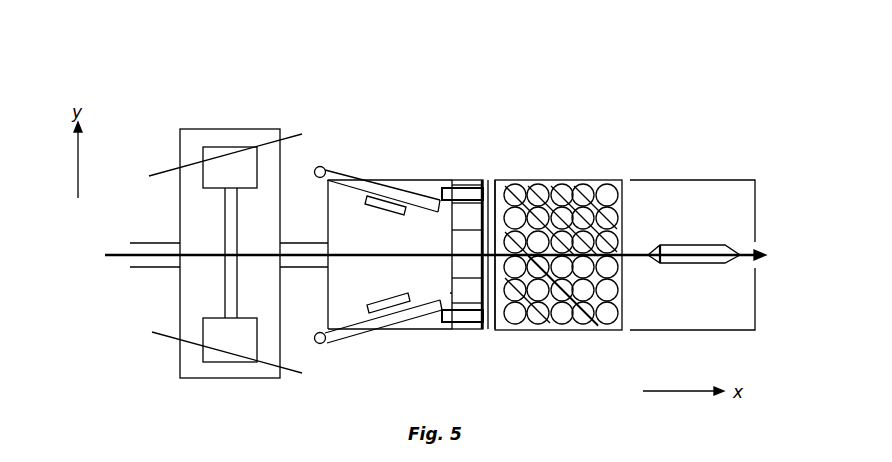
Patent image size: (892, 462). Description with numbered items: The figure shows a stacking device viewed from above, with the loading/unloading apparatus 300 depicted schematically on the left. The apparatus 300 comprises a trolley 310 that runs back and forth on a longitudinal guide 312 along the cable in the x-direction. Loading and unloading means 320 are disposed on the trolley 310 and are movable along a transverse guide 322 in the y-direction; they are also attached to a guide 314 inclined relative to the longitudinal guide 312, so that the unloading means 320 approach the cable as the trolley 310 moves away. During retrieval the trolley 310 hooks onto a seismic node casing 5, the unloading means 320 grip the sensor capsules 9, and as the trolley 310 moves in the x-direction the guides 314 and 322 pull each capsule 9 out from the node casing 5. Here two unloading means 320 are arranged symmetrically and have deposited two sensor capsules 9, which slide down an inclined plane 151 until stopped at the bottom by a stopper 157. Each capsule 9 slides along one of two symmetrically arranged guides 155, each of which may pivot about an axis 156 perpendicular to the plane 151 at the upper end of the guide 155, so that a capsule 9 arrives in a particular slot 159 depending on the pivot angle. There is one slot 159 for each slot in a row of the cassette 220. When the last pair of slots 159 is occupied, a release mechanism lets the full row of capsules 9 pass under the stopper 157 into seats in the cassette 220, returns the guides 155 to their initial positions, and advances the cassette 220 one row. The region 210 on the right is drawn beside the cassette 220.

The loading/unloading apparatus 300 is at (186, 92).
The trolley 310 is at (195, 379).
The longitudinal guide 312 is at (176, 242).
The inclined guide 314 is at (178, 348).
The loading and unloading means 320 is at (231, 146).
The transverse guide 322 is at (225, 279).
The inclined plane 151 is at (418, 180).
The guide 155 is at (345, 336).
The axis 156 is at (325, 166).
The stopper 157 is at (496, 180).
The slot 159 is at (450, 293).
The sensor capsule 9 is at (385, 213).
The cassette 220 is at (588, 180).
The tube section 210 is at (681, 192).
The seismic node casing 5 is at (689, 259).